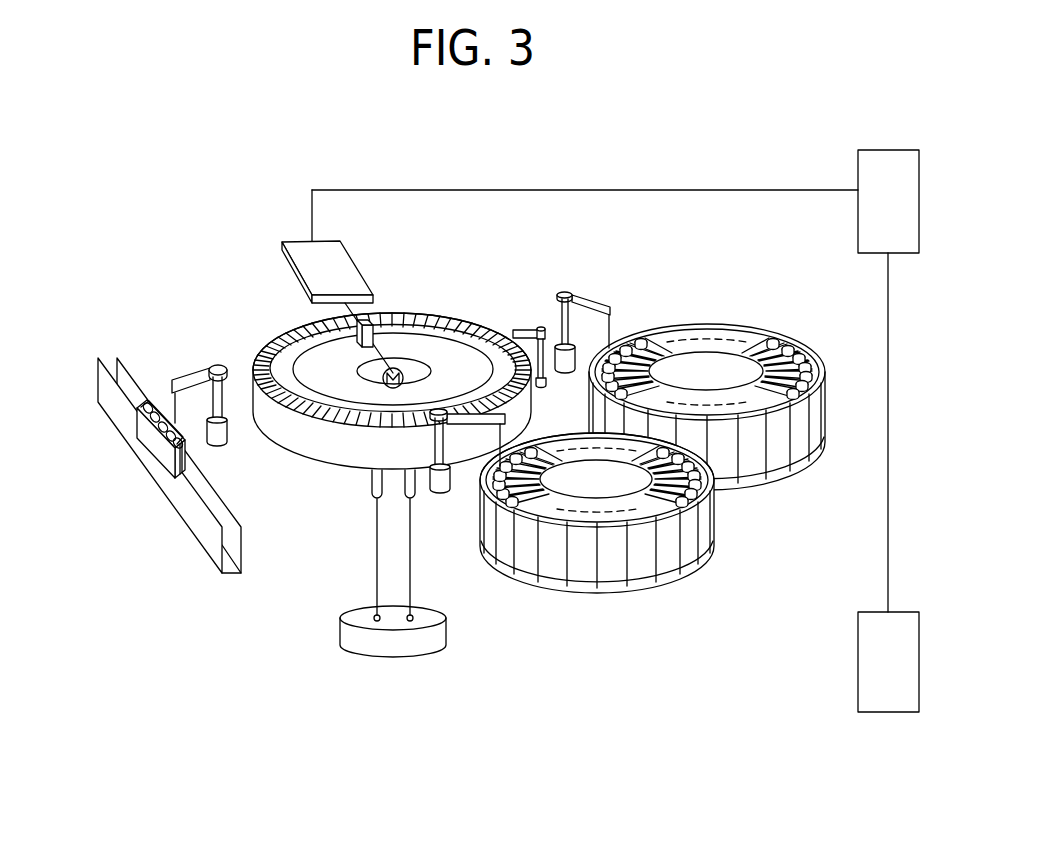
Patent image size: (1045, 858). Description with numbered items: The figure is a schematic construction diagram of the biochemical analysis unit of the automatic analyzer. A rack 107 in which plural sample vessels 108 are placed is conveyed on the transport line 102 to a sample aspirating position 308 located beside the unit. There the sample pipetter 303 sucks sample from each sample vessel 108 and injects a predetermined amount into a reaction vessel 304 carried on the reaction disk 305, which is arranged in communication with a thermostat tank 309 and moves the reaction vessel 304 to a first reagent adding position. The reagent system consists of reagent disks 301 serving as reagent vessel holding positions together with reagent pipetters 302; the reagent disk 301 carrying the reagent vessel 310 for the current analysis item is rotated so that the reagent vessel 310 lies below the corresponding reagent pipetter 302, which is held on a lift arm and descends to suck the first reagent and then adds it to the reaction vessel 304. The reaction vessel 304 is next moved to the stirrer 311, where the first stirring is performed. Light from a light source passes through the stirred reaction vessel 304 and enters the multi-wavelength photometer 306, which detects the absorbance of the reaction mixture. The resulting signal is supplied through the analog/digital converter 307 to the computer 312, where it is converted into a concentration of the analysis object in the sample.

The transport line 102 is at (112, 357).
The rack 107 is at (147, 423).
The sample vessels 108 is at (150, 404).
The reagent disk 301 is at (781, 333).
The reagent pipetter 302 is at (602, 304).
The sample pipetter 303 is at (197, 368).
The reaction vessel 304 is at (462, 320).
The reaction disk 305 is at (292, 353).
The multi-wavelength photometer 306 is at (355, 246).
The analog/digital converter 307 is at (858, 228).
The sample aspirating position 308 is at (147, 447).
The thermostat tank 309 is at (396, 657).
The reagent vessel 310 is at (646, 350).
The stirrer 311 is at (518, 328).
The computer 312 is at (858, 663).